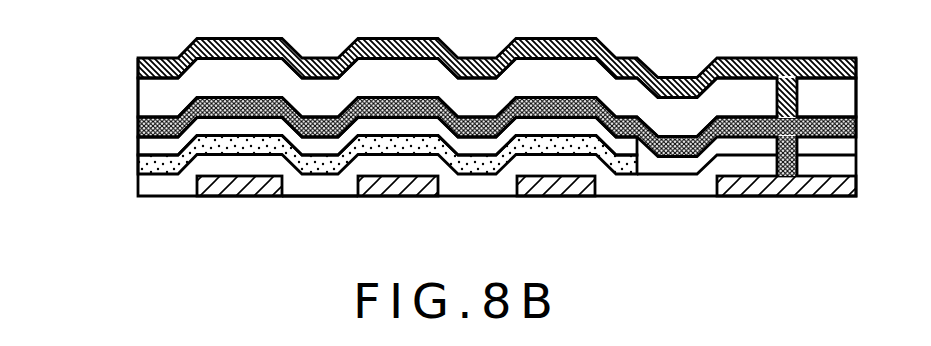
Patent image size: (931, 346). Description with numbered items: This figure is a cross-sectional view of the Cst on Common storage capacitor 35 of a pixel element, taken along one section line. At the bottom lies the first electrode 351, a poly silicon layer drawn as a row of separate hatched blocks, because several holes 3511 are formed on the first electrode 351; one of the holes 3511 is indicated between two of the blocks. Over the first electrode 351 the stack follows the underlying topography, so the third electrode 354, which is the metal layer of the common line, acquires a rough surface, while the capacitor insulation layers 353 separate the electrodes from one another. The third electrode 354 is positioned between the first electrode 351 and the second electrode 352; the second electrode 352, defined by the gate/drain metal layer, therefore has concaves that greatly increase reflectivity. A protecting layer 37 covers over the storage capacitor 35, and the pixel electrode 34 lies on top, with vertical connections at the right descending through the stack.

The pixel electrode 34 is at (138, 67).
The protecting layer 37 is at (150, 93).
The storage capacitor 35 is at (62, 112).
The first electrode 351 is at (138, 193).
The holes 3511 is at (316, 178).
The second electrode 352 is at (138, 124).
The capacitor insulation layers 353 is at (192, 139).
The third electrode 354 is at (148, 151).